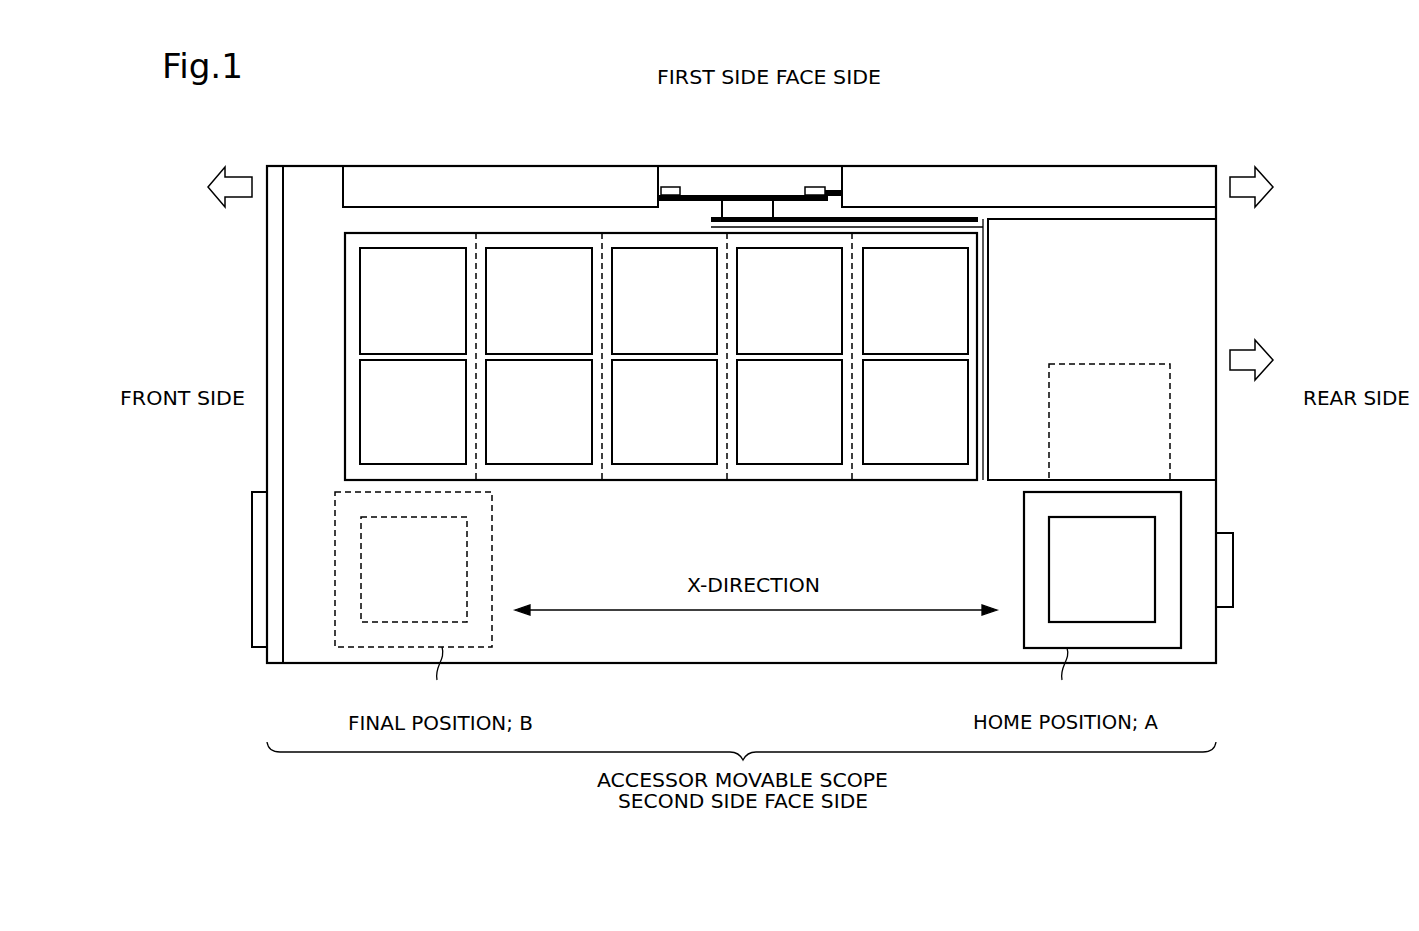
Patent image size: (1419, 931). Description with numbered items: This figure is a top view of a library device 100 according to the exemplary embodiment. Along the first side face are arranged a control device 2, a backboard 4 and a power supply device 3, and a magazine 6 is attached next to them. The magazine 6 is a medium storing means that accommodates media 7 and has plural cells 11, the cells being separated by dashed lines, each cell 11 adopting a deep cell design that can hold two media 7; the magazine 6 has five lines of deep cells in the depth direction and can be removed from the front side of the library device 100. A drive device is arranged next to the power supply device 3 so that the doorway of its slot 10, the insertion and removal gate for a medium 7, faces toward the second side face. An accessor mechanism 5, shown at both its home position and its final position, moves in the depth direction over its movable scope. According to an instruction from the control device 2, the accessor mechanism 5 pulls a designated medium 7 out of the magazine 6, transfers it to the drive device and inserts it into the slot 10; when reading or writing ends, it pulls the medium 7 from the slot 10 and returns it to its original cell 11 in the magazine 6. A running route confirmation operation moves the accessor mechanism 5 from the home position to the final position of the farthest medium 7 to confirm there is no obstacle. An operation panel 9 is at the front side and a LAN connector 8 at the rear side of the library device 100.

The library device 100 is at (1222, 90).
The control device 2 is at (389, 178).
The power supply device 3 is at (1065, 177).
The backboard 4 is at (755, 197).
The accessor mechanism 5 is at (492, 533).
The magazine 6 is at (345, 297).
The medium 7 is at (664, 356).
The LAN connector 8 is at (1233, 558).
The operation panel 9 is at (252, 558).
The slot 10 is at (1158, 455).
The cell 11 is at (447, 238).